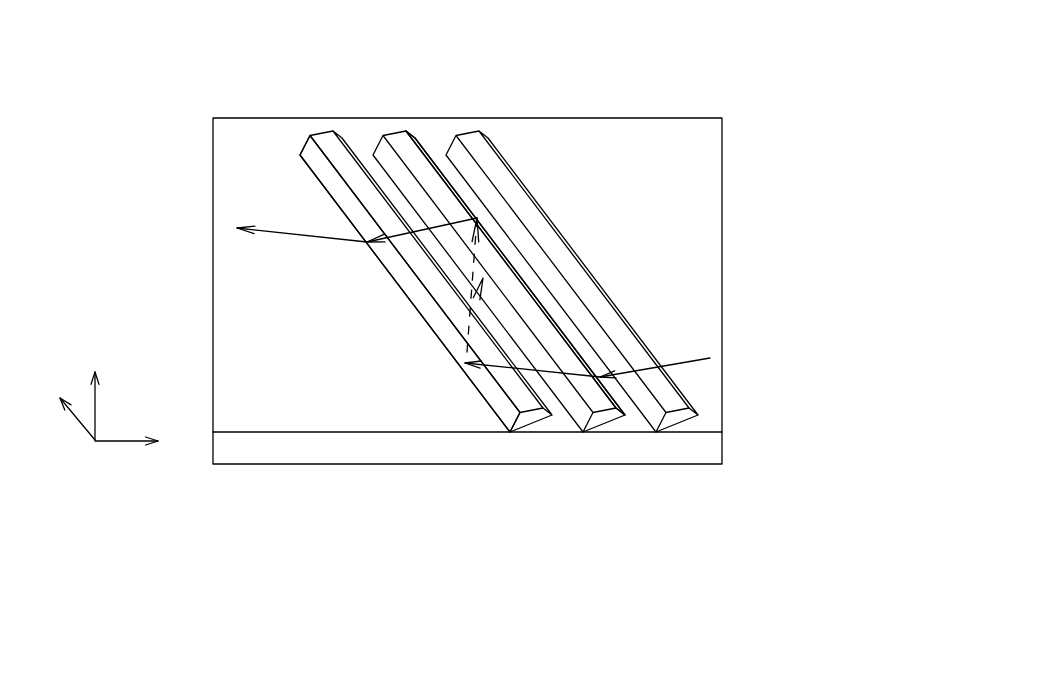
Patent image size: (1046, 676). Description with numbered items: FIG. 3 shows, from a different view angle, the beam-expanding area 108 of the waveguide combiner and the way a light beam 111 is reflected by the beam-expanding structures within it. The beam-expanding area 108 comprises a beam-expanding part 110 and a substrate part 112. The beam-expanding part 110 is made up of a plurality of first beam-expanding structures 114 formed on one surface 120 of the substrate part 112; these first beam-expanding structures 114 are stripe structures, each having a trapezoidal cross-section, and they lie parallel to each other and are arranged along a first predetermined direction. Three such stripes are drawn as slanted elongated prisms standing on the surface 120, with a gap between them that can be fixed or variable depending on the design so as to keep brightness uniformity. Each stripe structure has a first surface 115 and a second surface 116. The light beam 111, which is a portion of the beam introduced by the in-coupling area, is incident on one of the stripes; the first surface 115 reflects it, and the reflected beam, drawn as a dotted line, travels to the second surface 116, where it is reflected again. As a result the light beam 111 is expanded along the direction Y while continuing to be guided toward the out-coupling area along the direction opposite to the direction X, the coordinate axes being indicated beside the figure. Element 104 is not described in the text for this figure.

The beam-expanding area 108 is at (782, 110).
The light guide plate 104 is at (213, 172).
The beam-expanding part 110 is at (303, 172).
The substrate part 112 is at (195, 277).
The first beam-expanding structures 114 is at (347, 157).
The first surface 115 is at (500, 407).
The second surface 116 is at (620, 407).
The light beam 111 is at (695, 359).
The surface 120 is at (698, 213).